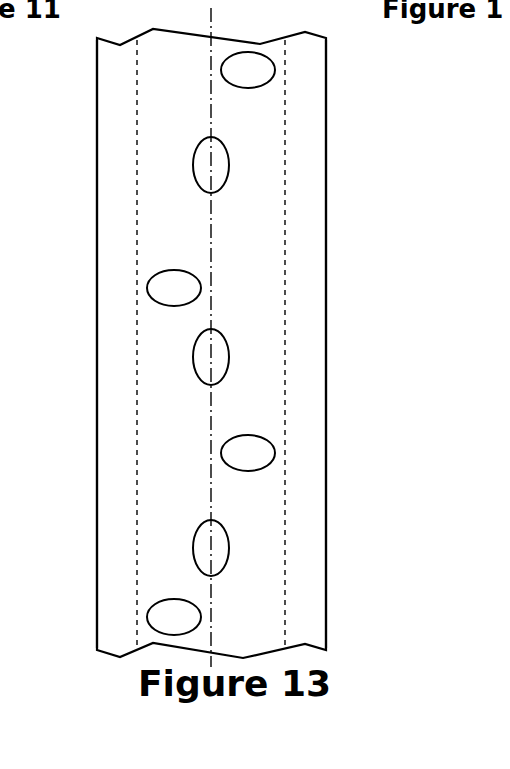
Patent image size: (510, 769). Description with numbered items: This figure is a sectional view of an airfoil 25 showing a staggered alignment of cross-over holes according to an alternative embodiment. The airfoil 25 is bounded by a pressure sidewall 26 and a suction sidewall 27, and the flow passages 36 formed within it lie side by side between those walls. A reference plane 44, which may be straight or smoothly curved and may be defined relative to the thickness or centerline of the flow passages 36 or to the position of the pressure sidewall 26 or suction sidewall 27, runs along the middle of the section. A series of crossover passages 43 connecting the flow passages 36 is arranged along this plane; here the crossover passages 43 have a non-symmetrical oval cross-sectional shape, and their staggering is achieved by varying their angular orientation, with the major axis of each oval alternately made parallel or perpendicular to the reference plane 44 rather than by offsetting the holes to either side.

The airfoil 25 is at (360, 218).
The pressure sidewall 26 is at (326, 134).
The suction sidewall 27 is at (97, 158).
The flow passages 36 is at (153, 445).
The crossover passages 43 is at (221, 64).
The reference plane 44 is at (211, 10).